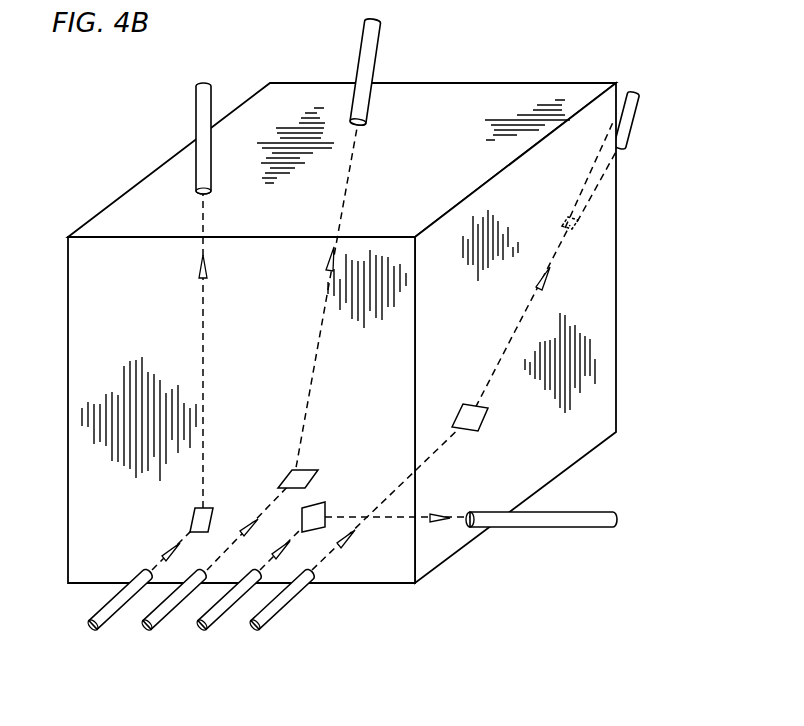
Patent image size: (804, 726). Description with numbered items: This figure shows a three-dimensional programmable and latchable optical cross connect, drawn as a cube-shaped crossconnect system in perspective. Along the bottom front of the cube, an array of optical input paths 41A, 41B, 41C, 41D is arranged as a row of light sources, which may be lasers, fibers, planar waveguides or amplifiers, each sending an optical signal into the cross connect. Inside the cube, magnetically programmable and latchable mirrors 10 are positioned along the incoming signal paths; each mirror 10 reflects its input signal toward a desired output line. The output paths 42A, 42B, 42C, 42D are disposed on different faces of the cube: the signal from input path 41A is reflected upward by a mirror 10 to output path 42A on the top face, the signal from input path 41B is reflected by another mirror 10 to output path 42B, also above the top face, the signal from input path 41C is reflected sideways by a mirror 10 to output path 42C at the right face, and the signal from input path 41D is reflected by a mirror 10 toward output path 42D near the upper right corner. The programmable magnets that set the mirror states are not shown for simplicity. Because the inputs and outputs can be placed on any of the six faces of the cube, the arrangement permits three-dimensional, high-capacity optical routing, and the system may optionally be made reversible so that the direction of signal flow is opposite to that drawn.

The programmable, latchable mirror 10 is at (192, 518).
The optical input path 41A is at (93, 633).
The optical input path 41B is at (147, 633).
The optical input path 41C is at (202, 633).
The optical input path 41D is at (255, 633).
The output path 42A is at (196, 107).
The output path 42B is at (378, 44).
The output path 42C is at (550, 525).
The output path 42D is at (637, 113).